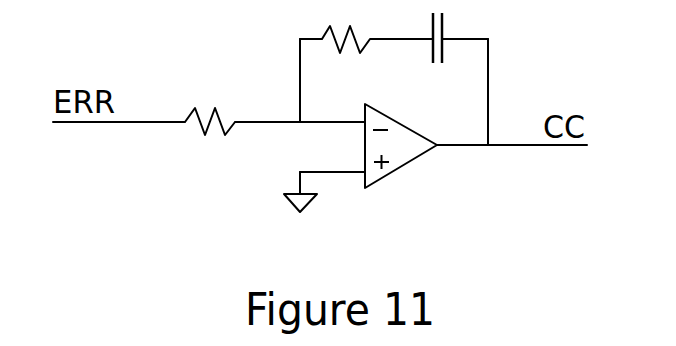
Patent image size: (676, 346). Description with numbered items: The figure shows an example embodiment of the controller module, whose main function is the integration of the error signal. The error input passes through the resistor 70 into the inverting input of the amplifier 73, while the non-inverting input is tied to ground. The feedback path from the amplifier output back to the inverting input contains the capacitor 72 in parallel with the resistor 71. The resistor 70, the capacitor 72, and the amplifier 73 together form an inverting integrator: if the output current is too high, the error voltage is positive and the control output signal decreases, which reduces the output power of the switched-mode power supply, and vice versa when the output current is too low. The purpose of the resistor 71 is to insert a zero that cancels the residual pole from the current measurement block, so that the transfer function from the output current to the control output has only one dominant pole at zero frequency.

The resistor 70 is at (210, 128).
The resistor 71 is at (347, 45).
The capacitor 72 is at (446, 52).
The amplifier 73 is at (401, 162).